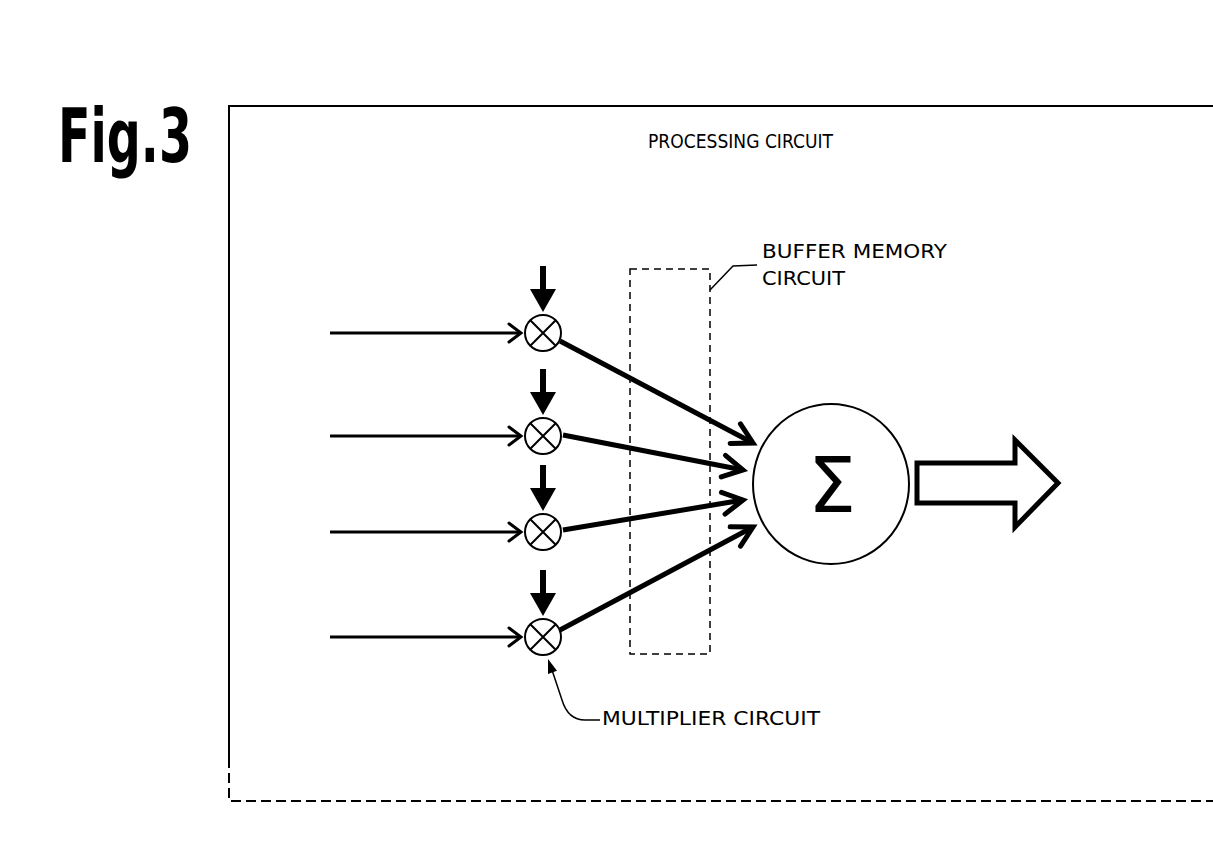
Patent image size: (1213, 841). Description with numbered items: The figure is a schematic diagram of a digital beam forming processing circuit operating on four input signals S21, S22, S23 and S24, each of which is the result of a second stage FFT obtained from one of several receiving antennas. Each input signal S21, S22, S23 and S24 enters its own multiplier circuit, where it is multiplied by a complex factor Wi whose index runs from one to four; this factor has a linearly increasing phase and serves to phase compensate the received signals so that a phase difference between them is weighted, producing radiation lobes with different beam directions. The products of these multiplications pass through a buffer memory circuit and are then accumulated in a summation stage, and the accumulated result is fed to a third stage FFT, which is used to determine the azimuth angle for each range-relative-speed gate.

The input signal S21 is at (389, 332).
The input signal S22 is at (389, 435).
The input signal S23 is at (389, 531).
The input signal S24 is at (389, 636).
The complex factor Wi is at (542, 403).